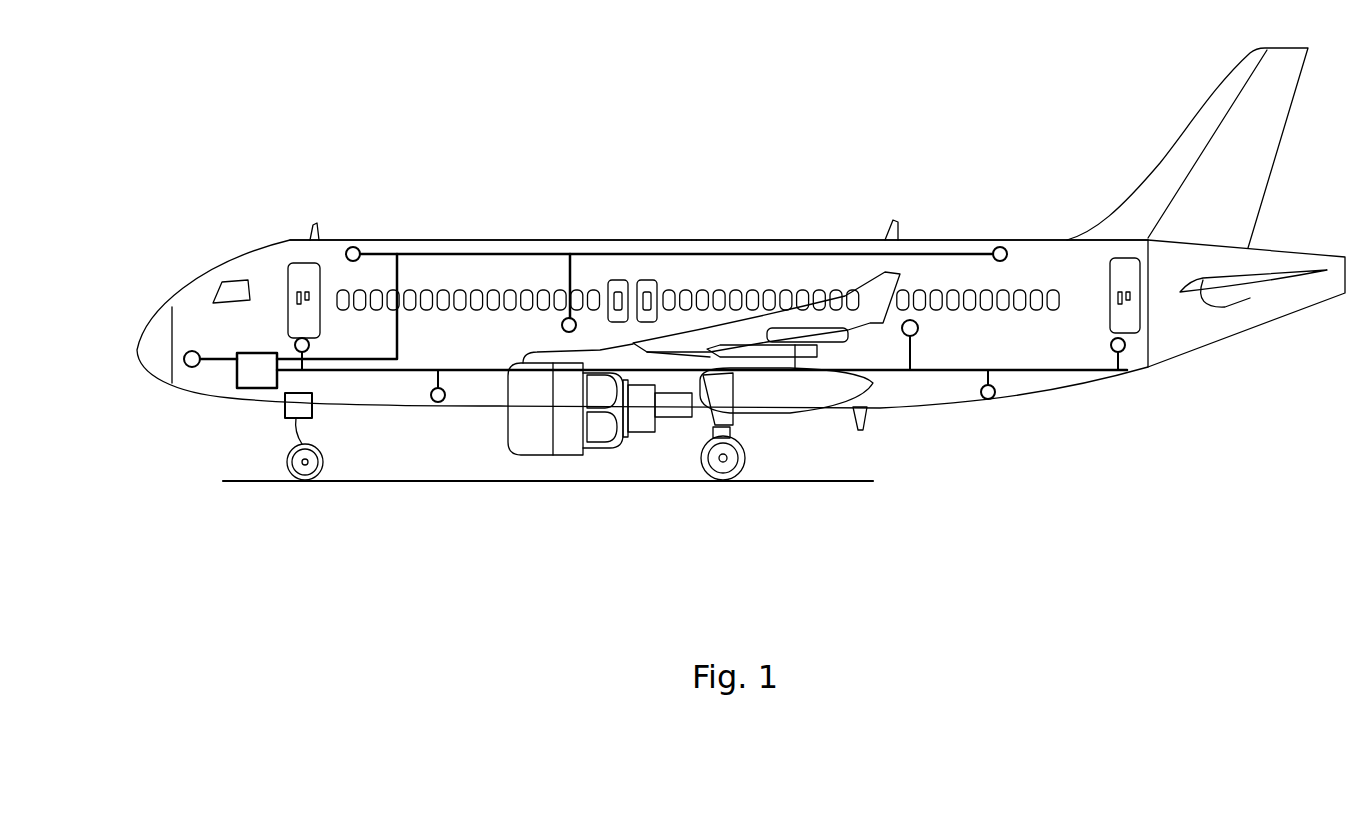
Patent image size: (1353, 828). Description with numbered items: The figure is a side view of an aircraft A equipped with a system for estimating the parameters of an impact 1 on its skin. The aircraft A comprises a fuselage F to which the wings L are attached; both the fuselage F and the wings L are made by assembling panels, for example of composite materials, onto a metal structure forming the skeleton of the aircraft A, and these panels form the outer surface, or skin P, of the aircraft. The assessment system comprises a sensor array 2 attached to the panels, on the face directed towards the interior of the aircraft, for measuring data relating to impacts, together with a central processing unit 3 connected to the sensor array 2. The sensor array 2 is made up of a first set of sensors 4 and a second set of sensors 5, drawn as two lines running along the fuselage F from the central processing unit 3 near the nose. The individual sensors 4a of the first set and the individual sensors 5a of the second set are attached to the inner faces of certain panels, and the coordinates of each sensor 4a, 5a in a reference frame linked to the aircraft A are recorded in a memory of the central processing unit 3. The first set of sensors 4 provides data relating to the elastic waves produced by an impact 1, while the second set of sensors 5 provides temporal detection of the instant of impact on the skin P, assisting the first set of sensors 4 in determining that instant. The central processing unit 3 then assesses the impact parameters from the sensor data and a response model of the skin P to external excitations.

The impact 1 is at (263, 268).
The sensor array 2 is at (438, 352).
The central processing unit 3 is at (247, 376).
The first set of sensors 4 is at (524, 252).
The sensor 4a is at (356, 249).
The second set of sensors 5 is at (393, 373).
The sensor 5a is at (296, 340).
The fuselage F is at (1043, 238).
The skin P is at (1036, 342).
The wings L is at (748, 330).
The aircraft A is at (277, 548).